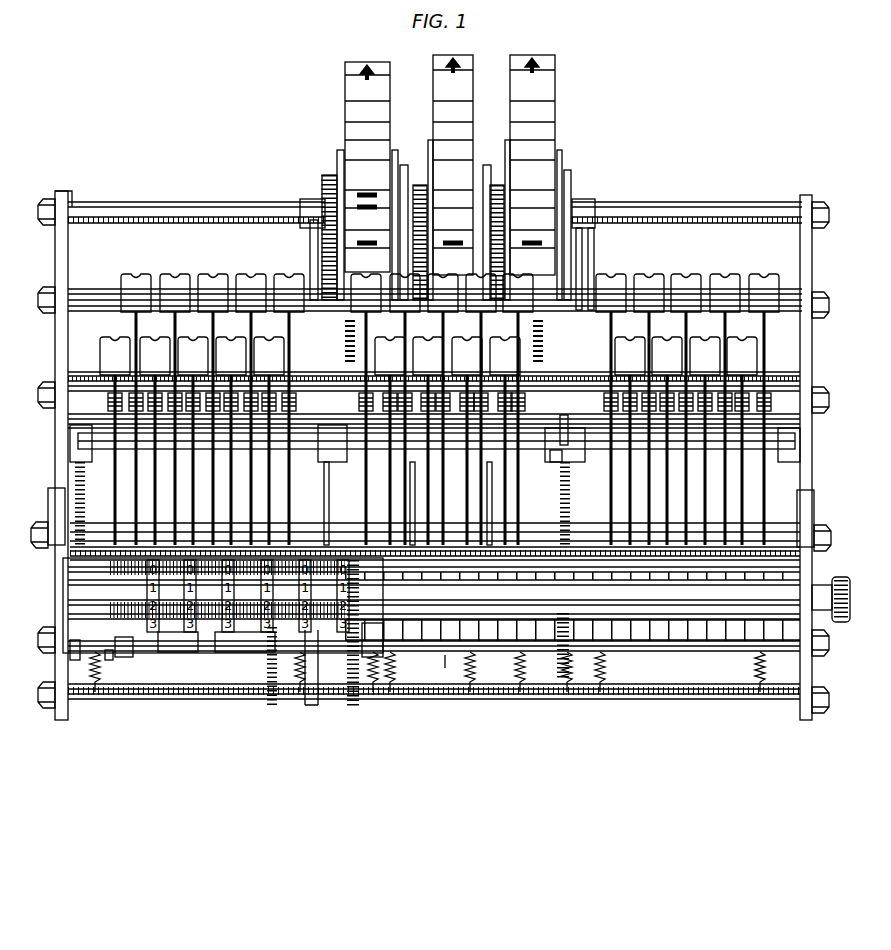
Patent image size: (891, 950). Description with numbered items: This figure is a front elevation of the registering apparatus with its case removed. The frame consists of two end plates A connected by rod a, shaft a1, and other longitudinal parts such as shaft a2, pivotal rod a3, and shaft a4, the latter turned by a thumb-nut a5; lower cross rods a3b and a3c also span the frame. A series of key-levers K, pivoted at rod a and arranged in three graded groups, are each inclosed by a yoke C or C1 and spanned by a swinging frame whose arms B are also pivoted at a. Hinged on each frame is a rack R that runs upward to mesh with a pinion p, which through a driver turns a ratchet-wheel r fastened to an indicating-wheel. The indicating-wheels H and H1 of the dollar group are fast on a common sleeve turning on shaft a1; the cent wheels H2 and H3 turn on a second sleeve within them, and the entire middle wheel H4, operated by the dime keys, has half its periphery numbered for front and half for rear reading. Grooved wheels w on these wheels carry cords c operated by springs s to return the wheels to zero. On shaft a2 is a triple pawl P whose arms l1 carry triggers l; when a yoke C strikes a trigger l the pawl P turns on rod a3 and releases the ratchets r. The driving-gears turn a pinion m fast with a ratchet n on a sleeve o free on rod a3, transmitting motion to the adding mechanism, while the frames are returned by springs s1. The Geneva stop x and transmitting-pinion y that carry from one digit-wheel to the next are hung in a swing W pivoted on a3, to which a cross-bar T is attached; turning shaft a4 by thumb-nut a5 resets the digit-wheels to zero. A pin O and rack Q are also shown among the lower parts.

The end plate A is at (55, 465).
The rod a is at (45, 540).
The shaft a1 is at (643, 210).
The shaft a2 is at (120, 296).
The pivotal rod a3 is at (765, 378).
The lower cross rods a3b is at (434, 691).
The lower cross rod a3c is at (665, 655).
The shaft a4 is at (68, 596).
The thumb-nut a5 is at (852, 591).
The key-lever K is at (186, 340).
The yoke C is at (86, 483).
The yoke C1 is at (435, 443).
The frame arm B is at (100, 522).
The cross-bar T is at (212, 560).
The swing W is at (133, 655).
The sleeve o is at (112, 660).
The transmitting-pinion y is at (168, 653).
The Geneva stop x is at (255, 655).
The pinion m is at (316, 633).
The ratchet n is at (268, 700).
The spring s is at (576, 669).
The spring s1 is at (771, 670).
The pin O is at (445, 667).
The indicating-wheel H is at (373, 62).
The indicating-wheel H1 is at (562, 160).
The indicating-wheel H2 is at (396, 160).
The indicating-wheel H3 is at (555, 80).
The middle indicating-wheel H4 is at (473, 108).
The ratchet-wheel r is at (340, 150).
The grooved wheel w is at (405, 168).
The pinion p is at (325, 192).
The triple pawl P is at (330, 290).
The cord c is at (494, 359).
The rack Q is at (85, 470).
The rack R is at (322, 470).
The trigger l is at (552, 458).
The arm l1 is at (568, 425).